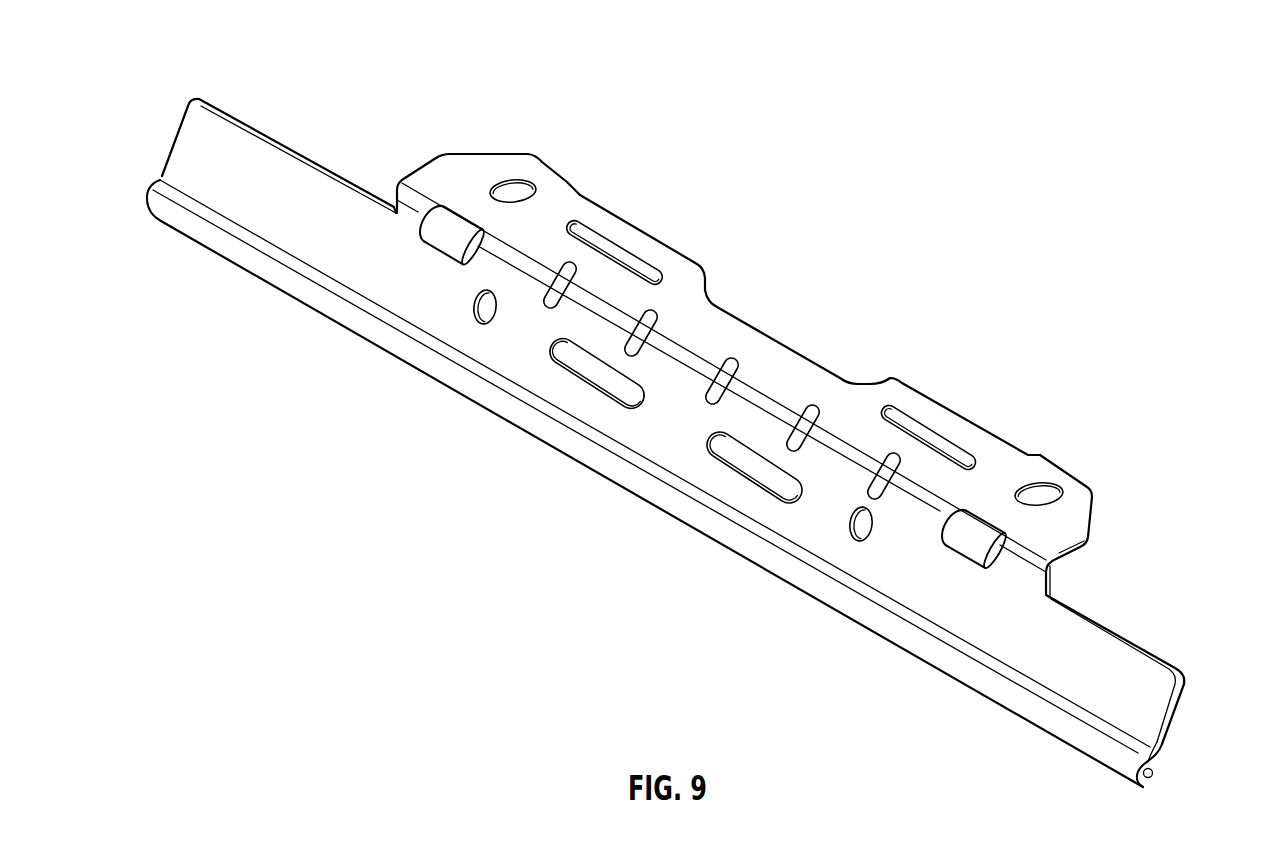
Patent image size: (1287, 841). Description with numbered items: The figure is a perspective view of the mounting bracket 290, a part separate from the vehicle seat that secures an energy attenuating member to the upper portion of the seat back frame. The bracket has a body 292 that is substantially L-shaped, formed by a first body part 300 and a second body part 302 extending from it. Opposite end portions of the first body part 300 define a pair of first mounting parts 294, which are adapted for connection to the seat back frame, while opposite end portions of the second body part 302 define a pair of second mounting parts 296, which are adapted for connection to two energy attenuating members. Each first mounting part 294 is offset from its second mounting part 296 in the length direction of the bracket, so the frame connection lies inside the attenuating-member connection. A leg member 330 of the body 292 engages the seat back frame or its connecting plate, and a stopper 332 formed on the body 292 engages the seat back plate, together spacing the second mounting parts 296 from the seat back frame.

The mounting bracket 290 is at (487, 496).
The body 292 is at (662, 432).
The first mounting part 294 is at (490, 172).
The second mounting part 296 is at (222, 152).
The first body part 300 is at (780, 372).
The second body part 302 is at (807, 525).
The leg member 330 is at (1092, 750).
The stopper 332 is at (437, 233).